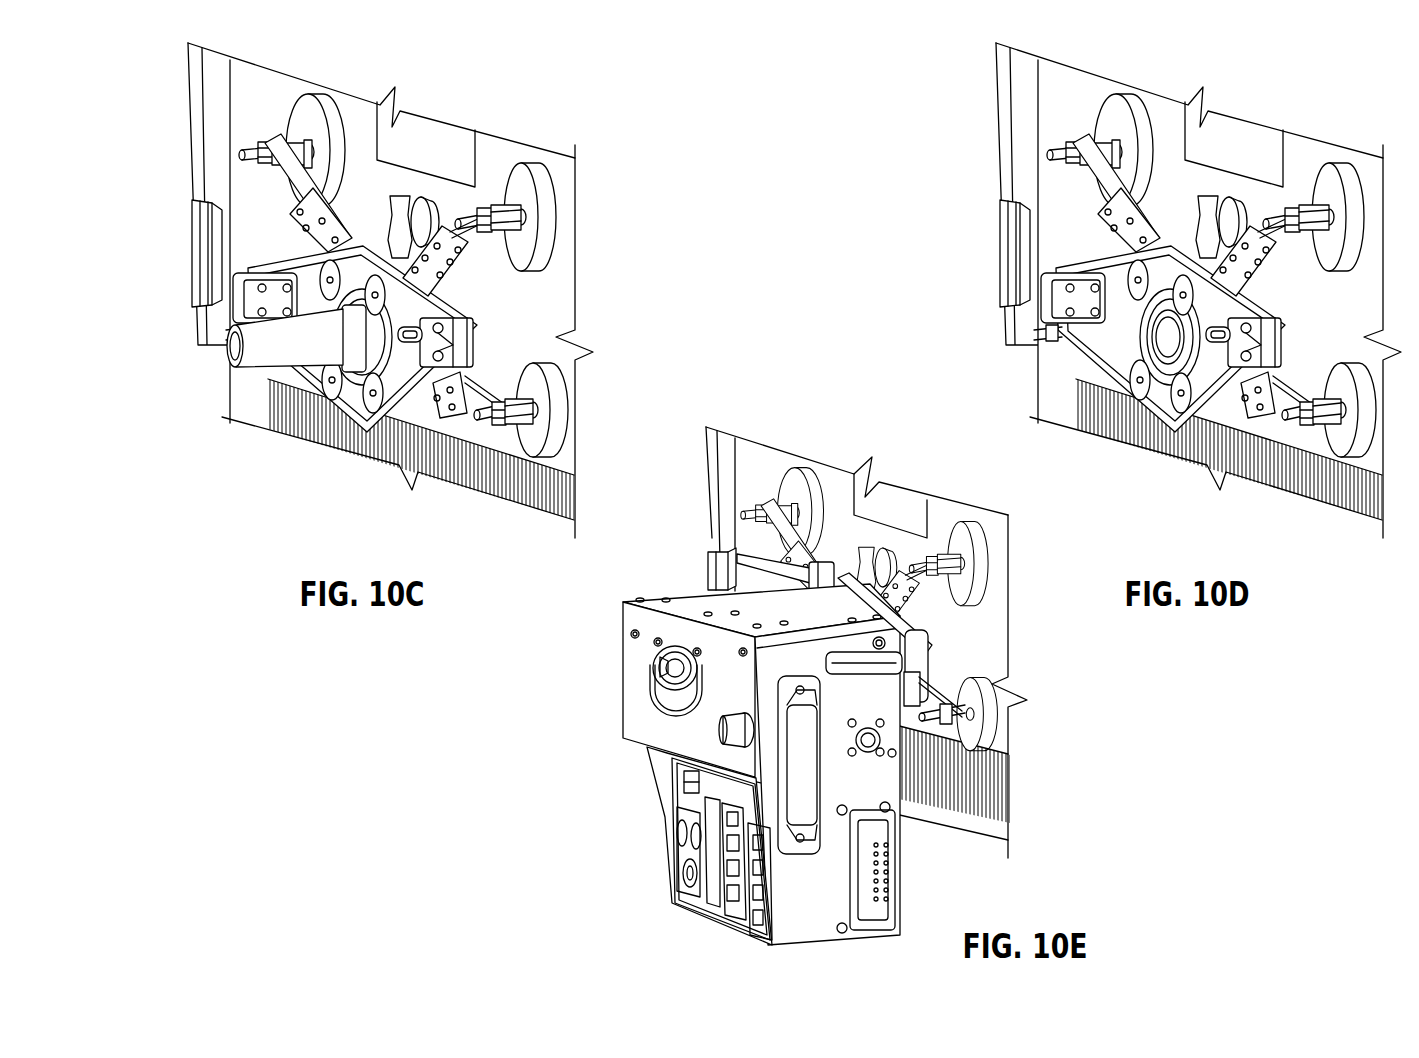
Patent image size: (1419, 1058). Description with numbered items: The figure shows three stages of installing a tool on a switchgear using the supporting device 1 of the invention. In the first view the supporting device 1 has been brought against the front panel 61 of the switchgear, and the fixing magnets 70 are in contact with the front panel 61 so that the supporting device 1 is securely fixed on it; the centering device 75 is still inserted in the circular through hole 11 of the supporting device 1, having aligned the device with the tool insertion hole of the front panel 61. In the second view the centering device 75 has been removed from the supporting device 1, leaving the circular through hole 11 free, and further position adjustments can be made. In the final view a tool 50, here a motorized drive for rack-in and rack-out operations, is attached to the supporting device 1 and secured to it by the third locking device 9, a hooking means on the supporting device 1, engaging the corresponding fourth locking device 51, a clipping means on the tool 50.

In FIG. 10C, the supporting device 1 is at (218, 385).
In FIG. 10D, the supporting device 1 is at (1197, 283).
In FIG. 10E, the third locking device 9 is at (886, 660).
In FIG. 10D, the circular through hole 11 is at (1136, 405).
In FIG. 10E, the tool 50 is at (624, 614).
In FIG. 10E, the fourth locking device 51 is at (866, 670).
In FIG. 10C, the front panel 61 is at (505, 336).
In FIG. 10D, the front panel 61 is at (1198, 290).
In FIG. 10E, the front panel 61 is at (945, 644).
In FIG. 10C, the fixing magnets 70 is at (524, 190).
In FIG. 10D, the fixing magnets 70 is at (1330, 179).
In FIG. 10E, the fixing magnets 70 is at (975, 527).
In FIG. 10C, the centering device 75 is at (262, 338).